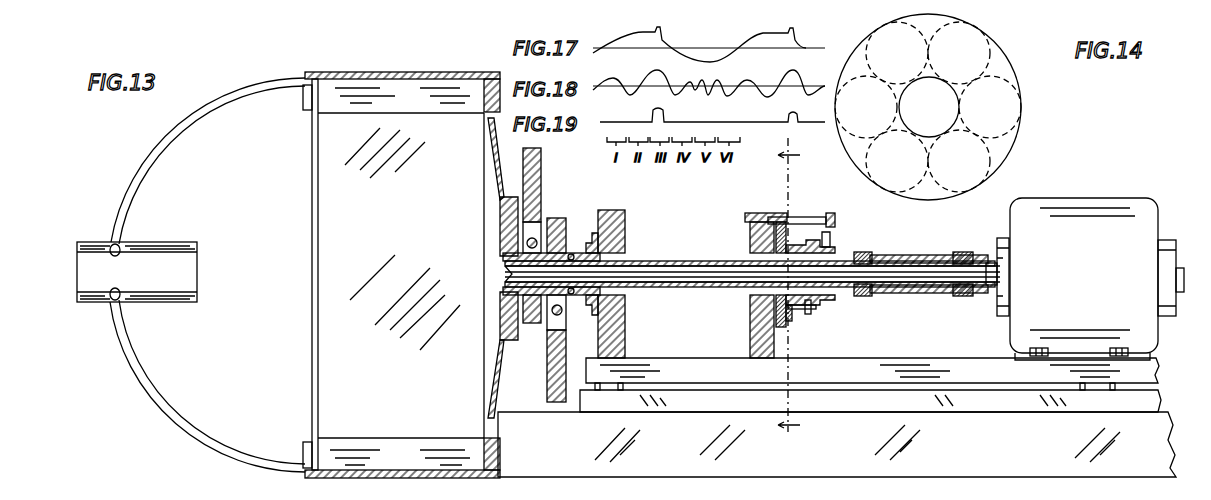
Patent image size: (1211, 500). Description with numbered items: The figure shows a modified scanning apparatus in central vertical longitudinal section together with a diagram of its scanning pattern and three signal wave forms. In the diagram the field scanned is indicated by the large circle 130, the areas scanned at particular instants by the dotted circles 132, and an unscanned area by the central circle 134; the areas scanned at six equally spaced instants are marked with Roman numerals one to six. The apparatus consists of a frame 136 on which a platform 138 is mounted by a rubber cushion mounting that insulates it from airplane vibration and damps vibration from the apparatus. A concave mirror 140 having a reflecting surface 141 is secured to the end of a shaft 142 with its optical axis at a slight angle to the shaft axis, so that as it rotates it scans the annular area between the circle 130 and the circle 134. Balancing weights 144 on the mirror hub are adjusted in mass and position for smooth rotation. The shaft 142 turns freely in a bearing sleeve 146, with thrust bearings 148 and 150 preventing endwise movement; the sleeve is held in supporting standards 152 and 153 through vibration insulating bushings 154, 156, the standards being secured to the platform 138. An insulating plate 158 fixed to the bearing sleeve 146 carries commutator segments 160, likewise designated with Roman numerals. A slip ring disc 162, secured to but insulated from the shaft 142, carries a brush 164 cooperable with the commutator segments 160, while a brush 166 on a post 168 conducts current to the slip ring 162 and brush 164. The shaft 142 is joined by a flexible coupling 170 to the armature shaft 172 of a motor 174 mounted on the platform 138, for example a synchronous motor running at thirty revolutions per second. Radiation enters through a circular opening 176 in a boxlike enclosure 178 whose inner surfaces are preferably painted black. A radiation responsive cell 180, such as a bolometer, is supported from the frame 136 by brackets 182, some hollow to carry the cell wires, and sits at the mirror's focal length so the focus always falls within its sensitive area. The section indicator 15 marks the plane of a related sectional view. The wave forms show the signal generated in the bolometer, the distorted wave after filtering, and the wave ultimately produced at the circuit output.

In FIG. 14, the large circle 130 is at (1020, 84).
In FIG. 14, the dotted circles 132 is at (992, 58).
In FIG. 14, the central circle 134 is at (896, 100).
In FIG. 13, the frame 136 is at (396, 96).
In FIG. 13, the platform 138 is at (668, 366).
In FIG. 13, the concave mirror 140 is at (495, 176).
In FIG. 13, the reflecting surface 141 is at (490, 143).
In FIG. 13, the shaft 142 is at (506, 266).
In FIG. 13, the balancing weights 144 is at (540, 190).
In FIG. 13, the bearing sleeve 146 is at (655, 262).
In FIG. 13, the thrust bearing 148 is at (583, 240).
In FIG. 13, the thrust bearing 150 is at (800, 240).
In FIG. 13, the supporting standard 152 is at (632, 230).
In FIG. 13, the supporting standard 153 is at (752, 230).
In FIG. 13, the vibration insulating bushing 154 is at (628, 250).
In FIG. 13, the vibration insulating bushing 156 is at (752, 244).
In FIG. 13, the insulating plate 158 is at (790, 204).
In FIG. 13, the commutator segments 160 is at (795, 330).
In FIG. 13, the slip ring disc 162 is at (822, 306).
In FIG. 13, the brush 164 is at (808, 320).
In FIG. 13, the brush 166 is at (838, 250).
In FIG. 13, the post 168 is at (797, 248).
In FIG. 13, the flexible coupling 170 is at (912, 258).
In FIG. 13, the armature shaft 172 is at (982, 260).
In FIG. 13, the motor 174 is at (1105, 206).
In FIG. 13, the circular opening 176 is at (312, 408).
In FIG. 13, the boxlike enclosure 178 is at (342, 75).
In FIG. 13, the radiation responsive cell 180 is at (160, 246).
In FIG. 13, the brackets 182 is at (212, 113).
In FIG. 13, the section line 15 is at (798, 285).